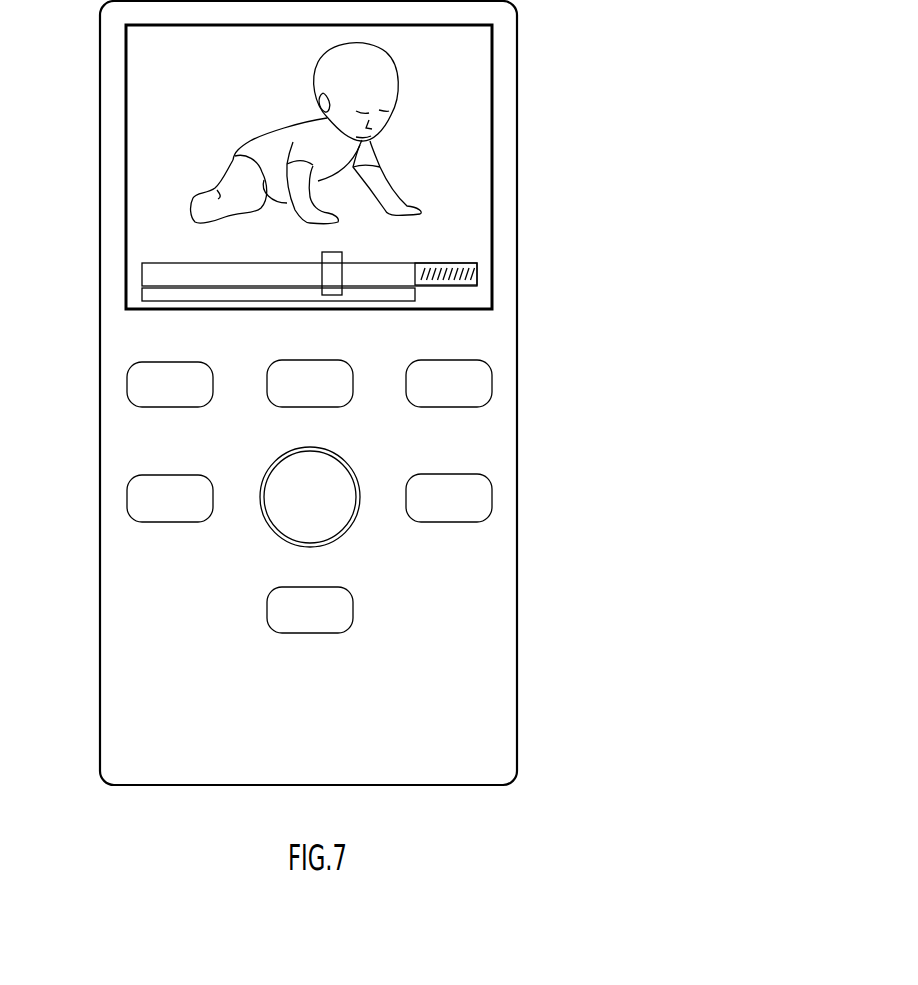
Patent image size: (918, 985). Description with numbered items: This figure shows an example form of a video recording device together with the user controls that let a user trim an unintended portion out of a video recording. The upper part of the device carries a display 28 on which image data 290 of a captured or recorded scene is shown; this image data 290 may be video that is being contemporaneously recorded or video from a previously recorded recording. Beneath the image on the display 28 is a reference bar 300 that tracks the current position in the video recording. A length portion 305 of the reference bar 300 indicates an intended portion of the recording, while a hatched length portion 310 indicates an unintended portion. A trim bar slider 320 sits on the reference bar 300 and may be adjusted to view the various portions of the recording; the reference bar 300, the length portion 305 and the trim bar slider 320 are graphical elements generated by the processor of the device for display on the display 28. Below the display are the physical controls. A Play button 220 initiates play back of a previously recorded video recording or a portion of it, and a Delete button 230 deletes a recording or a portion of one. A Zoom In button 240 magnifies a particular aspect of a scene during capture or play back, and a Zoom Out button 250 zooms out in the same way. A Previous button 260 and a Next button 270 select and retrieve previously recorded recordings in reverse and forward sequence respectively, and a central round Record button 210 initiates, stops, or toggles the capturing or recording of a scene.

The display 28 is at (492, 183).
The image data 290 is at (397, 100).
The reference bar 300 is at (407, 253).
The length portion 310 is at (458, 285).
The trim bar slider 320 is at (329, 252).
The length portion 305 is at (280, 302).
The Play button 220 is at (127, 383).
The Zoom In button 240 is at (270, 397).
The Delete button 230 is at (492, 383).
The Previous button 260 is at (172, 521).
The Record button 210 is at (348, 528).
The Next button 270 is at (492, 497).
The Zoom Out button 250 is at (267, 613).